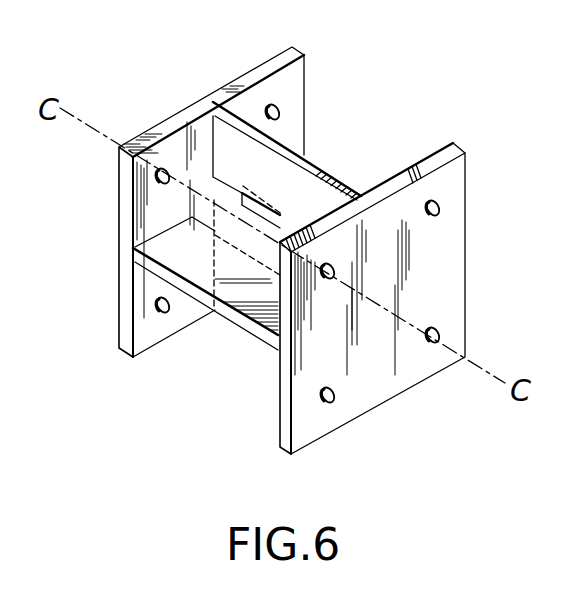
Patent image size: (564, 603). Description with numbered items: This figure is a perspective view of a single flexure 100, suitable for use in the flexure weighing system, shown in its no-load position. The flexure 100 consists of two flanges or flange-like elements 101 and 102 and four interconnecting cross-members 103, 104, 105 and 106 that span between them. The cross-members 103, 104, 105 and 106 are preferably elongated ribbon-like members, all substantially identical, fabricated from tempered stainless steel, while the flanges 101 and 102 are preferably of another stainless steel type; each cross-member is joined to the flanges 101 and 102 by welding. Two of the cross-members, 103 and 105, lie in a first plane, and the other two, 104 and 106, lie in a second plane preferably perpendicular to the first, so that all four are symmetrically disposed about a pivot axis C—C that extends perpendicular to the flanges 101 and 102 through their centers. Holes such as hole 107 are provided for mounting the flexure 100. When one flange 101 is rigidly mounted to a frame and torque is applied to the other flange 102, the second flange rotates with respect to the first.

The flexure 100 is at (199, 407).
The flange 101 is at (455, 276).
The flange 102 is at (128, 270).
The cross-member 103 is at (332, 164).
The cross-member 104 is at (240, 292).
The cross-member 105 is at (340, 180).
The cross-member 106 is at (247, 203).
The hole 107 is at (332, 404).